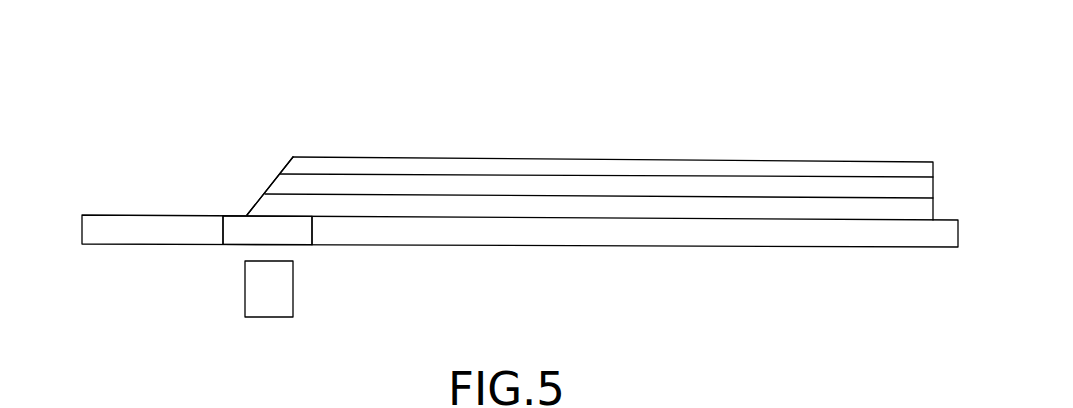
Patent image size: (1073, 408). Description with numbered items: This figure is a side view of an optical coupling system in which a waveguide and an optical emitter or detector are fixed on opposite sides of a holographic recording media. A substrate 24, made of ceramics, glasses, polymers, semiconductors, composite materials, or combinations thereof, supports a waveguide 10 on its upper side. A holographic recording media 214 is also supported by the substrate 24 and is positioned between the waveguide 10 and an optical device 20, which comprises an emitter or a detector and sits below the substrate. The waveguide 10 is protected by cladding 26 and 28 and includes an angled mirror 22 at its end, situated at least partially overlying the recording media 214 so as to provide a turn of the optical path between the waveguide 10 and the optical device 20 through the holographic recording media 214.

The waveguide 10 is at (922, 191).
The optical device 20 is at (290, 288).
The angled mirror 22 is at (269, 181).
The substrate 24 is at (602, 245).
The cladding 26 is at (640, 170).
The cladding 28 is at (373, 208).
The holographic recording media 214 is at (230, 245).